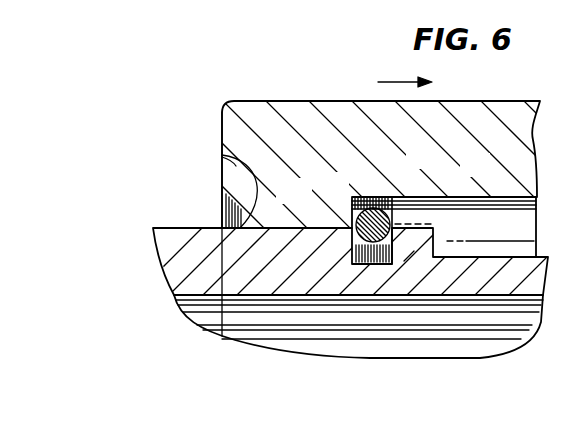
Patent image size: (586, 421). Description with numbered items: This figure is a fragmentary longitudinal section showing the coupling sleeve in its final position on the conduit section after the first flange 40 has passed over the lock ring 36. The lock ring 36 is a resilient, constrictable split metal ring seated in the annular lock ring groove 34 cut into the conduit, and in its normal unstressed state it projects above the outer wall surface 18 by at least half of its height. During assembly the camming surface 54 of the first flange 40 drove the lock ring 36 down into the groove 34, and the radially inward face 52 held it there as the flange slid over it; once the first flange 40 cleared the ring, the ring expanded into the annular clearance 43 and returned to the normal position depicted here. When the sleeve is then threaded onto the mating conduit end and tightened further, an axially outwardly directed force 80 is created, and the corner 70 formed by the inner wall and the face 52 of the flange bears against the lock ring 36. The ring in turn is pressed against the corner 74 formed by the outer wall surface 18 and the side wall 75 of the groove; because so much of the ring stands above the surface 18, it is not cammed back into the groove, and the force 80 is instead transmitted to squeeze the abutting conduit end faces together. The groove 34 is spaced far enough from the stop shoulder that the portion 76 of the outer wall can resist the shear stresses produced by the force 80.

The outer wall surface 18 is at (181, 225).
The annular lock ring groove 34 is at (380, 265).
The lock ring 36 is at (352, 246).
The first flange 40 is at (232, 186).
The annular clearance 43 is at (503, 224).
The radially inward face 52 is at (309, 226).
The camming surface 54 is at (233, 158).
The corner 70 is at (353, 219).
The corner 74 is at (393, 250).
The side wall 75 is at (413, 246).
The portion of the outer wall 76 is at (428, 215).
The axially outwardly directed force 80 is at (397, 72).